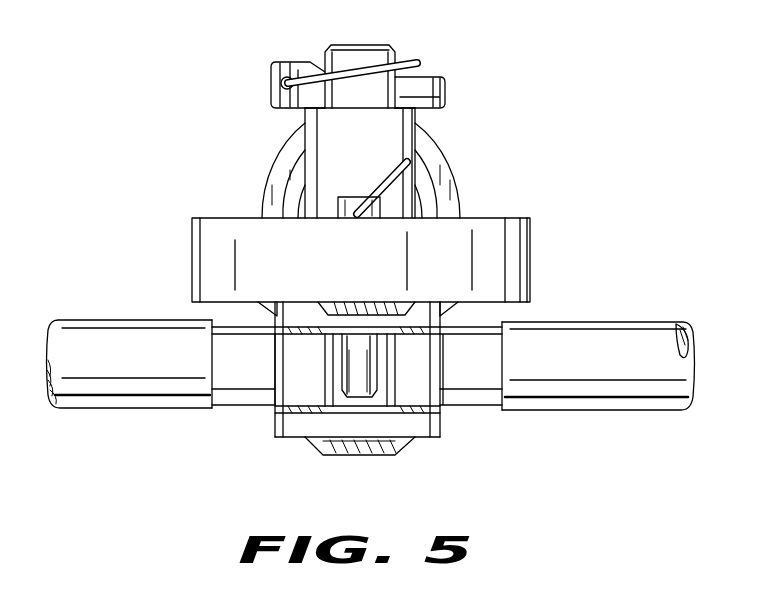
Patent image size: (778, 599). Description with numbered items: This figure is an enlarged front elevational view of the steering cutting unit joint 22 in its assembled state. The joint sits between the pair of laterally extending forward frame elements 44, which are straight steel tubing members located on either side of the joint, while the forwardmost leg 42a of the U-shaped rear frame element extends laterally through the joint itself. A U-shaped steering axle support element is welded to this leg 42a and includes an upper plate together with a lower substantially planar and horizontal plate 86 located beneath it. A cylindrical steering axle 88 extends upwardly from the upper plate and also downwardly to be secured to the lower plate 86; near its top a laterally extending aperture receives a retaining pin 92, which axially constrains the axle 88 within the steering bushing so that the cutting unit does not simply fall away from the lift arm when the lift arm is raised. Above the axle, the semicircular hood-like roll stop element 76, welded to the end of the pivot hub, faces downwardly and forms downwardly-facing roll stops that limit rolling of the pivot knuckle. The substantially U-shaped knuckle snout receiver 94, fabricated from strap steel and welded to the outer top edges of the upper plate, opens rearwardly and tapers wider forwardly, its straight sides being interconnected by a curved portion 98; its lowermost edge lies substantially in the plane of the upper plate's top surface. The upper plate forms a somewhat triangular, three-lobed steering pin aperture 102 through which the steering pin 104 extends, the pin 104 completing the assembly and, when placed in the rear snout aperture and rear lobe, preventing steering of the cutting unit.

The steering cutting unit joint 22 is at (570, 228).
The forwardmost leg of rear frame element 42a is at (241, 395).
The forward frame elements 44 is at (92, 340).
The roll stop element 76 is at (265, 180).
The lower plate 86 is at (283, 425).
The steering axle 88 is at (348, 60).
The retaining pin 92 is at (432, 79).
The knuckle snout receiver 94 is at (534, 285).
The curved portion 98 is at (332, 278).
The steering pin aperture 102 is at (340, 398).
The steering pin 104 is at (362, 378).